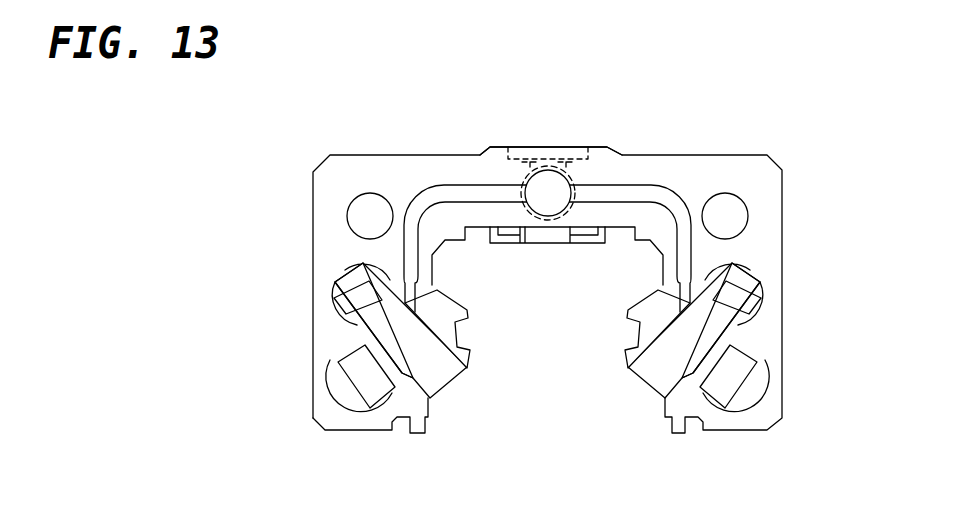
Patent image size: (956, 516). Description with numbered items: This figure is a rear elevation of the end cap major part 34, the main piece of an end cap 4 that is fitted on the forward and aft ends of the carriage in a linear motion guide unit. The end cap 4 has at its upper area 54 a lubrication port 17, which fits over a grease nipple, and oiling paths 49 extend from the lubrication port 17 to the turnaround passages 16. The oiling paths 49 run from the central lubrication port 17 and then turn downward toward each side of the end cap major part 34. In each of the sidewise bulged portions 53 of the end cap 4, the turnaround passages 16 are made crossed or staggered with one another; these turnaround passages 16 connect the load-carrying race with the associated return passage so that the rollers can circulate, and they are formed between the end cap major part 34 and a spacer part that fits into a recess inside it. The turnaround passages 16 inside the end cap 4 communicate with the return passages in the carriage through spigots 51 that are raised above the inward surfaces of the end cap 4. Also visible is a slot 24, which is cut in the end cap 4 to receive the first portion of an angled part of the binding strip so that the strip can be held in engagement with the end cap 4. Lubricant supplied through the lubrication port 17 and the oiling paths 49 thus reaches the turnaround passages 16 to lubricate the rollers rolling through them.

The end cap 4 is at (565, 259).
The end cap major part 34 is at (749, 146).
The turnaround passage 16 is at (378, 362).
The lubrication port 17 is at (550, 185).
The slot 24 is at (458, 340).
The oiling path 49 is at (426, 202).
The spigot 51 is at (738, 270).
The sidewise bulged portion 53 is at (328, 294).
The upper area 54 is at (457, 173).